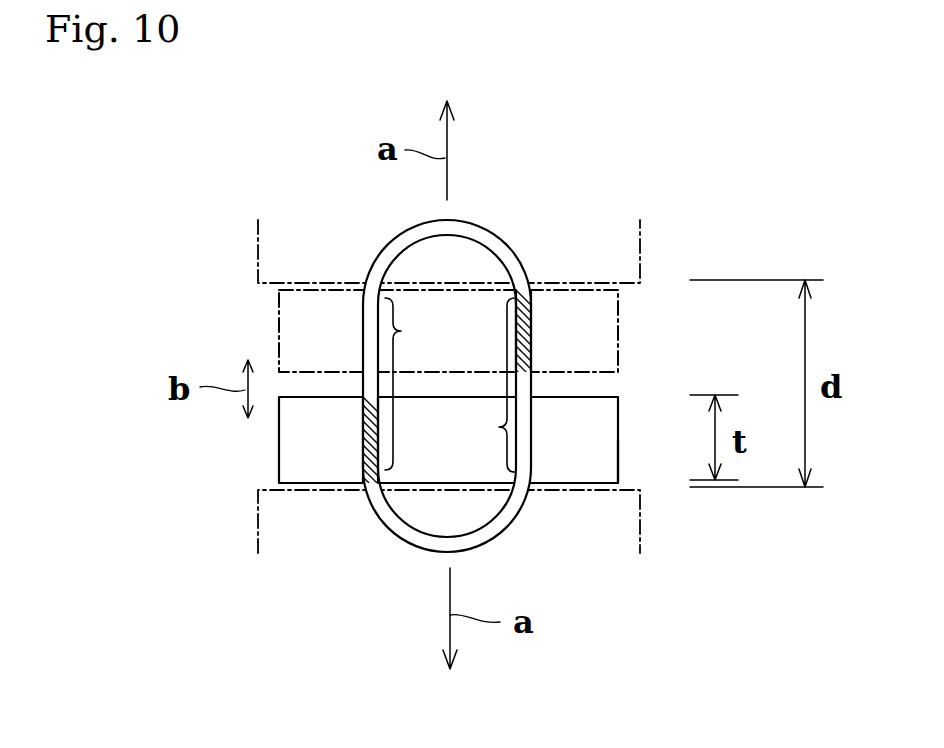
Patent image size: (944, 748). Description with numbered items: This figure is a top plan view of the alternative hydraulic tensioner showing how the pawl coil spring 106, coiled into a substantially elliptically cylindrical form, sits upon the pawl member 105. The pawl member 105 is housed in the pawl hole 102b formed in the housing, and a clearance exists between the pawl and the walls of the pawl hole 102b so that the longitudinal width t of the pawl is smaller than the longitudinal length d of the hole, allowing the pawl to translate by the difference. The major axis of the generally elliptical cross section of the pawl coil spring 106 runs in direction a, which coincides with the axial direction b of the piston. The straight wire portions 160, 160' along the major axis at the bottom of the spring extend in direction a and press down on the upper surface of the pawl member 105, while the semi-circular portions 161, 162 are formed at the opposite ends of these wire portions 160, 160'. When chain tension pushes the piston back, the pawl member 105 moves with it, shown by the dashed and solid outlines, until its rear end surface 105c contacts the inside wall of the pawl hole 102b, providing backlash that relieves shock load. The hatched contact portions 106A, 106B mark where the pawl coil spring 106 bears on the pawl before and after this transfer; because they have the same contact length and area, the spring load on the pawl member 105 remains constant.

The pawl hole 102b is at (263, 488).
The pawl member 105 is at (277, 313).
The rear end surface of the pawl member 105c is at (600, 486).
The pawl coil spring 106 is at (479, 214).
The contact portion before transfer 106A is at (370, 449).
The contact portion after transfer 106B is at (530, 333).
The wire portion 160 is at (417, 384).
The wire portion 160' is at (479, 385).
The semi-circular portion 161 is at (427, 542).
The semi-circular portion 162 is at (400, 244).